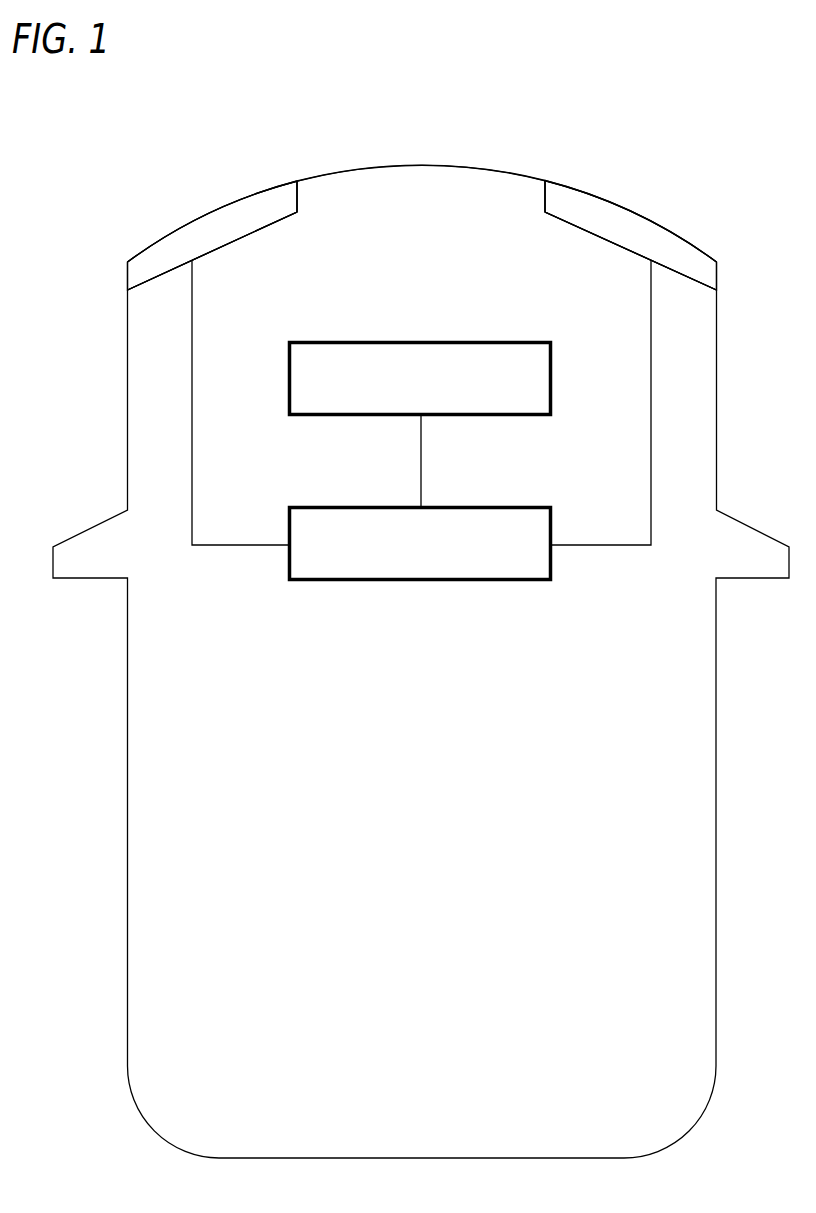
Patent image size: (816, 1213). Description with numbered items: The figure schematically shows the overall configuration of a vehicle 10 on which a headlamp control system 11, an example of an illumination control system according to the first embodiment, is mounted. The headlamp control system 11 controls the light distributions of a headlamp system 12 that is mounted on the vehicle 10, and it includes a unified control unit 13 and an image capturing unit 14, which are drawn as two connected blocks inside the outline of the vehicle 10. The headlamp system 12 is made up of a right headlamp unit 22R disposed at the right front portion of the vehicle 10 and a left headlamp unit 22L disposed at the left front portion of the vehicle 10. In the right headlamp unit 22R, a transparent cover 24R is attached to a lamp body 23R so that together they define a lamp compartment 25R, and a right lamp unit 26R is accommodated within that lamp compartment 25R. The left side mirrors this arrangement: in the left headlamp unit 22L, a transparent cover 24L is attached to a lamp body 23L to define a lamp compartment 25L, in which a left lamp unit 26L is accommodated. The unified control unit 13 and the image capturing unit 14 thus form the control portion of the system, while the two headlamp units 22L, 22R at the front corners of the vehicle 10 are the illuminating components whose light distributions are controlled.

The vehicle 10 is at (716, 678).
The headlamp control system 11 is at (320, 620).
The headlamp system 12 is at (440, 148).
The unified control unit 13 is at (452, 582).
The image capturing unit 14 is at (428, 341).
The left headlamp unit 22L is at (282, 238).
The right headlamp unit 22R is at (562, 237).
The lamp body 23L is at (300, 195).
The lamp body 23R is at (543, 198).
The transparent cover 24L is at (182, 223).
The transparent cover 24R is at (657, 223).
The lamp compartment 25L is at (207, 243).
The lamp compartment 25R is at (637, 243).
The left lamp unit 26L is at (241, 218).
The right lamp unit 26R is at (600, 215).